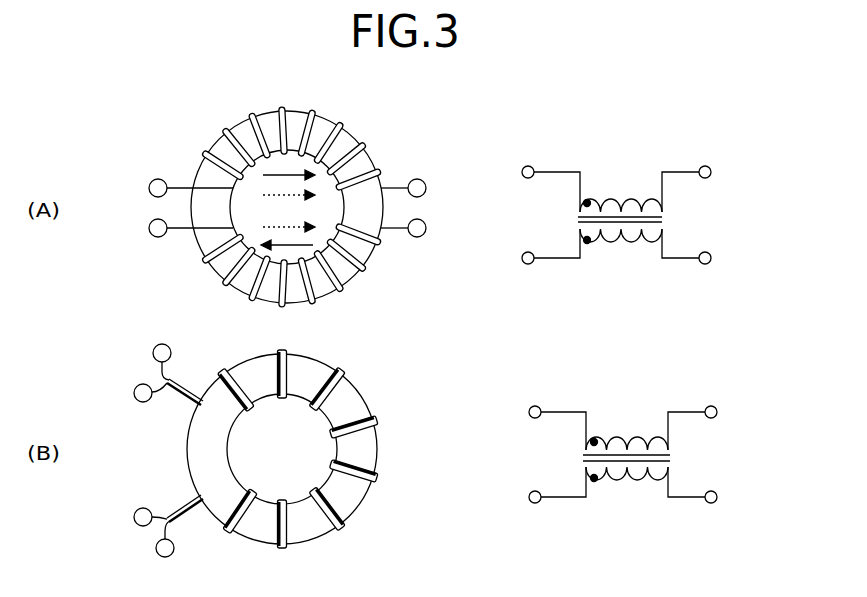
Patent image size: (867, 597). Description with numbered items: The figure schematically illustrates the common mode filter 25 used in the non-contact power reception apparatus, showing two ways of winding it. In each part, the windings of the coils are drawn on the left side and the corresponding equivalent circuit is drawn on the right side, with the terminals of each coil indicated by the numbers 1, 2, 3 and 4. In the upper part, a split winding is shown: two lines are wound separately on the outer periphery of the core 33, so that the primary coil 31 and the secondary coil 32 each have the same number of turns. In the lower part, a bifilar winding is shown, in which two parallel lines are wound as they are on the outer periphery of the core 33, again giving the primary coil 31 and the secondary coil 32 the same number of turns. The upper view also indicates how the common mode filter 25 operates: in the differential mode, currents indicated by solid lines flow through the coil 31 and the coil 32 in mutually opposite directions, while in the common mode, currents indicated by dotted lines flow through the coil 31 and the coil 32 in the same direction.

The terminal 1 is at (357, 305).
The terminal 2 is at (426, 334).
The terminal 3 is at (434, 399).
The terminal 4 is at (428, 373).
The common mode filter 25 is at (378, 123).
The primary coil 31 is at (383, 171).
The secondary coil 32 is at (382, 248).
The core 33 is at (239, 122).